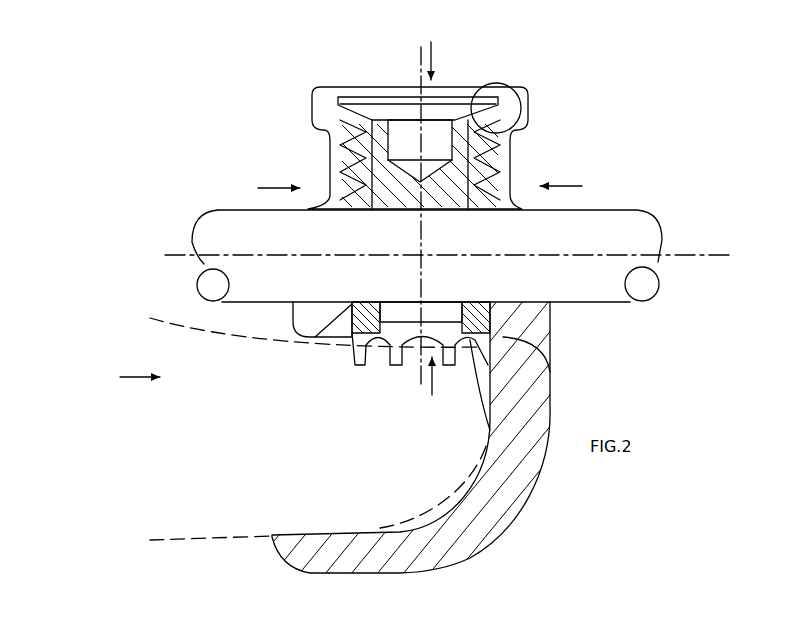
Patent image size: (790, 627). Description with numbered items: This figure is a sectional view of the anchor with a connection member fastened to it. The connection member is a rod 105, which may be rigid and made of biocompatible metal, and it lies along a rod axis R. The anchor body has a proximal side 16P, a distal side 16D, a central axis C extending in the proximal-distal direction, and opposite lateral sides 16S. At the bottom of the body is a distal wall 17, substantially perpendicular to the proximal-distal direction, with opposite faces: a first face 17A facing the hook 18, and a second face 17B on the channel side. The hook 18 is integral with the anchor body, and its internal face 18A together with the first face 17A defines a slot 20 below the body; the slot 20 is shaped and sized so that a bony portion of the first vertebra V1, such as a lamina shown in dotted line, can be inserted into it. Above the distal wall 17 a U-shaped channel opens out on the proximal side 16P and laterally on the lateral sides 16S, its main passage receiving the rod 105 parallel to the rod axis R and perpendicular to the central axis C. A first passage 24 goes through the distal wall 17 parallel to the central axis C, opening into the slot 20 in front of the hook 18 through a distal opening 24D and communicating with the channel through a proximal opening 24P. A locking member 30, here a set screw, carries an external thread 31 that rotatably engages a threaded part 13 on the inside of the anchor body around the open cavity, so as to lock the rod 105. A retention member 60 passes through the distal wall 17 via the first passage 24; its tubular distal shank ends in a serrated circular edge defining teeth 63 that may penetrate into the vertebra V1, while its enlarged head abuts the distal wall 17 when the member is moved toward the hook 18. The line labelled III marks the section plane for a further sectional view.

The threaded part 13 is at (488, 84).
The proximal side 16P is at (433, 49).
The lateral sides 16S is at (420, 187).
The distal side 16D is at (437, 389).
The distal wall 17 is at (313, 320).
The first face 17A is at (328, 340).
The second face 17B is at (323, 300).
The hook 18 is at (490, 516).
The internal face 18A is at (383, 530).
The slot 20 is at (313, 470).
The first passage 24 is at (490, 325).
The distal opening 24D is at (555, 375).
The proximal opening 24P is at (313, 338).
The locking member 30 is at (377, 166).
The external thread 31 is at (496, 152).
The retention member 60 is at (352, 302).
The teeth 63 is at (357, 368).
The rod 105 is at (603, 280).
The central axis C is at (420, 64).
The rod axis R is at (708, 254).
The first vertebra V1 is at (172, 320).
The plane III- III is at (126, 377).